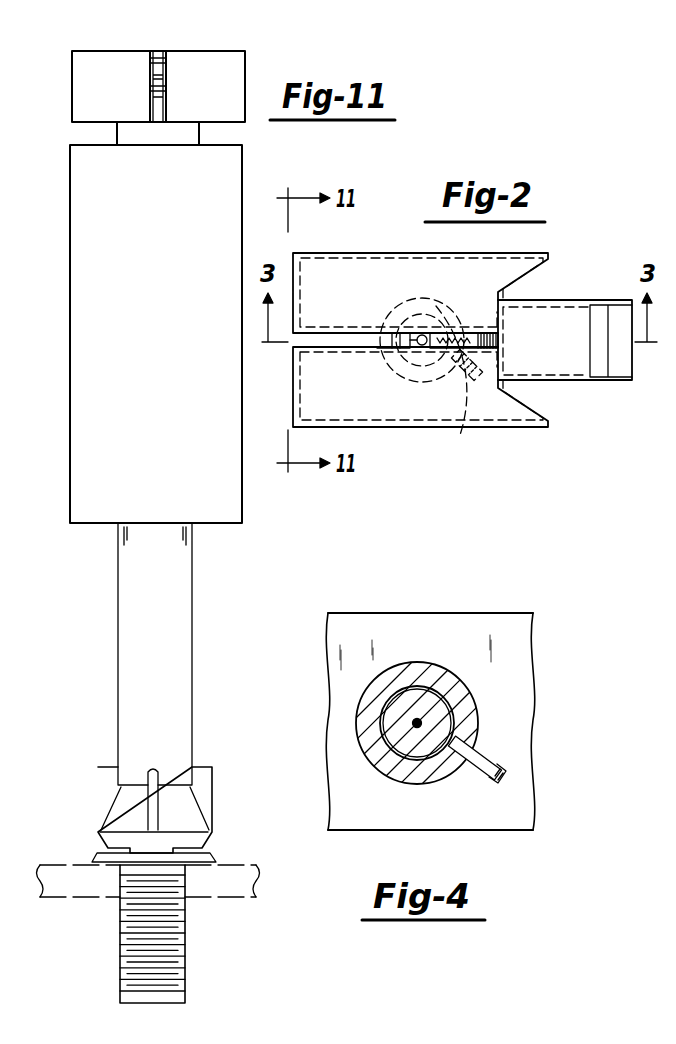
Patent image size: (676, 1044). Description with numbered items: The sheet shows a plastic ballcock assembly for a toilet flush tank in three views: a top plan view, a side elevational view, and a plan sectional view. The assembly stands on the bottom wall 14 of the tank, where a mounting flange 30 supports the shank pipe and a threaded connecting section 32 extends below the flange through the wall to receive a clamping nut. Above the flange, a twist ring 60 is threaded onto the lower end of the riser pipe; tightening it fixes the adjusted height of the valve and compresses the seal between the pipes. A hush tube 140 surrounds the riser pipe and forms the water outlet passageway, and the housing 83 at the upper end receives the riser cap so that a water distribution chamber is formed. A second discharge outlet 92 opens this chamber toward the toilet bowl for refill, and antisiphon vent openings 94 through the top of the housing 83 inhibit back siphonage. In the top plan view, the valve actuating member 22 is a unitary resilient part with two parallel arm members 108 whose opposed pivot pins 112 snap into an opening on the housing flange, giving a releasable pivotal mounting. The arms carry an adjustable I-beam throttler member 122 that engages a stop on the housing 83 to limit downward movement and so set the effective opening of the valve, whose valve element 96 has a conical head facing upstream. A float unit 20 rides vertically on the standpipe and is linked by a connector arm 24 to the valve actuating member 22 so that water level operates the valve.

In FIG. 11, the bottom wall 14 is at (226, 864).
In FIG. 11, the float unit 20 is at (68, 357).
In FIG. 4, the float unit 20 is at (428, 613).
In FIG. 11, the valve actuating member 22 is at (246, 70).
In FIG. 2, the valve actuating member 22 is at (450, 253).
In FIG. 2, the connector arm 24 is at (633, 370).
In FIG. 11, the mounting flange 30 is at (208, 853).
In FIG. 11, the threaded connecting section 32 is at (187, 951).
In FIG. 11, the twist ring 60 is at (210, 791).
In FIG. 2, the housing 83 is at (412, 392).
In FIG. 4, the housing 83 is at (476, 705).
In FIG. 2, the second discharge outlet 92 is at (466, 364).
In FIG. 4, the second discharge outlet 92 is at (477, 773).
In FIG. 2, the antisiphon vent openings 94 is at (453, 433).
In FIG. 2, the valve element 96 is at (432, 328).
In FIG. 11, the arm members 108 is at (80, 96).
In FIG. 2, the arm members 108 is at (358, 252).
In FIG. 2, the pivot pins 112 is at (402, 318).
In FIG. 11, the throttler member 122 is at (162, 51).
In FIG. 2, the throttler member 122 is at (498, 300).
In FIG. 11, the hush tube 140 is at (193, 597).